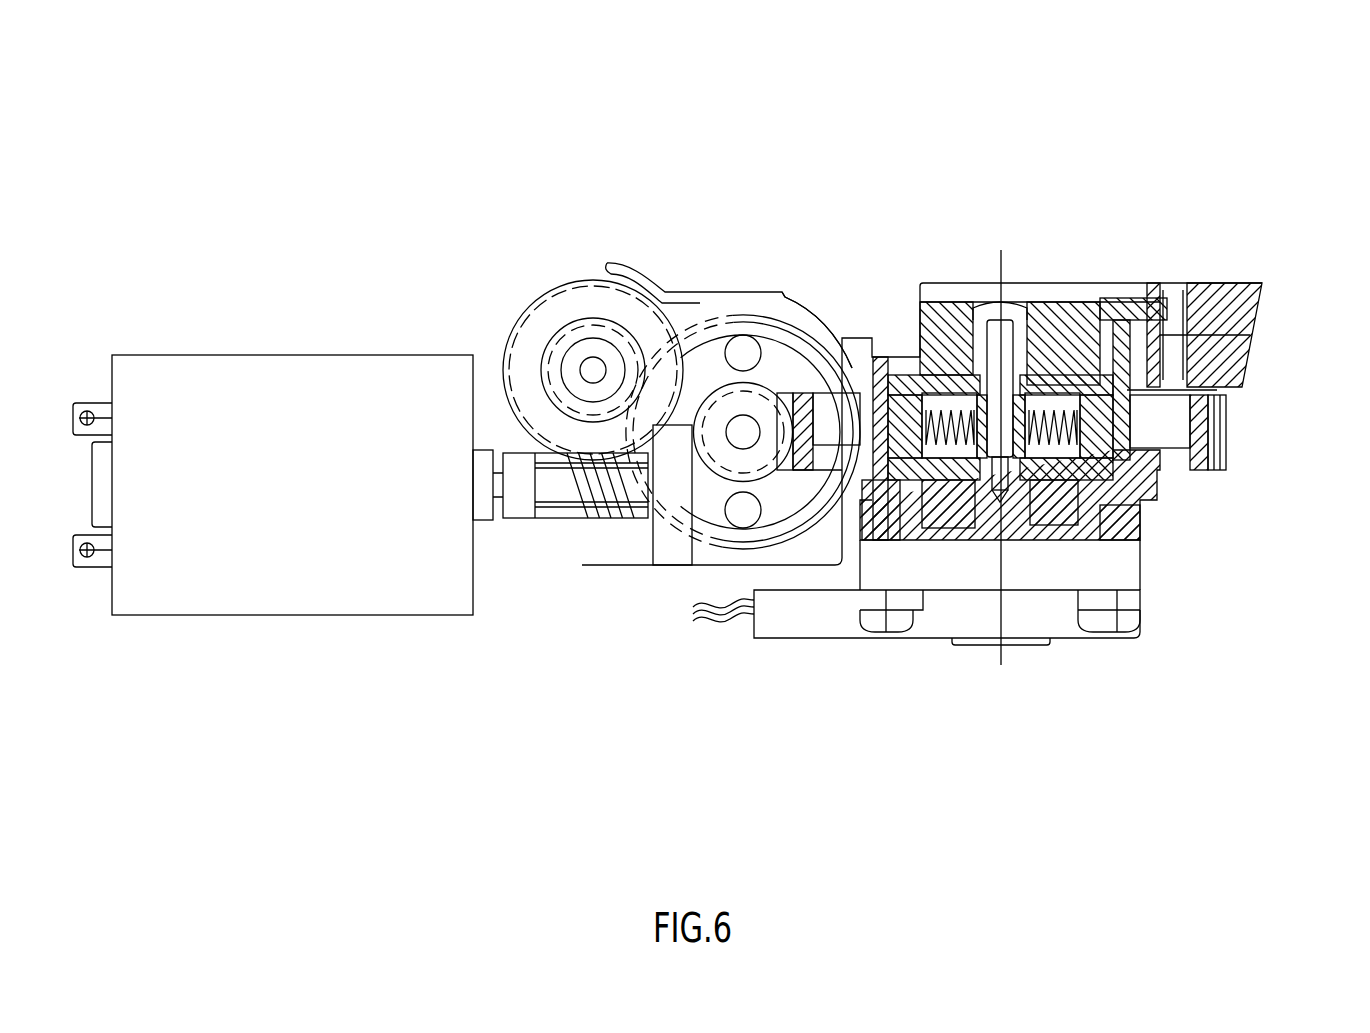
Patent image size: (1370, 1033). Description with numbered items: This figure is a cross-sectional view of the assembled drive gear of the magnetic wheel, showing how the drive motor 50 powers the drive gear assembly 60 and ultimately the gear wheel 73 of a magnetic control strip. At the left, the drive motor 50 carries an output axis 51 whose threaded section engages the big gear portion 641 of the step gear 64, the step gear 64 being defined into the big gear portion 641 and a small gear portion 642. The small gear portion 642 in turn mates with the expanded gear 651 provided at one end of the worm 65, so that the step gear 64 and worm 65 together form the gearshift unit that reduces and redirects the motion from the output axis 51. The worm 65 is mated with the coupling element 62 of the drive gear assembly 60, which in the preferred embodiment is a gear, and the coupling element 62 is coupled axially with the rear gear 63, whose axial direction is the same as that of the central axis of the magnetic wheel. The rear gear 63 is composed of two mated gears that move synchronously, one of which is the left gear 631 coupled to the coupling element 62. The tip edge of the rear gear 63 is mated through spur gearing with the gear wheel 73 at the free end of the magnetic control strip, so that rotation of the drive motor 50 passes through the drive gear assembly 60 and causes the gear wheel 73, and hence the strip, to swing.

The drive motor 50 is at (285, 615).
The output axis 51 is at (550, 518).
The drive gear assembly 60 is at (608, 153).
The coupling element 62 is at (1217, 437).
The rear gear 63 is at (1012, 418).
The left gear 631 is at (1187, 388).
The step gear 64 is at (430, 207).
The big gear portion 641 is at (545, 318).
The small gear portion 642 is at (590, 325).
The worm 65 is at (743, 391).
The expanded gear 651 is at (758, 308).
The gear wheel 73 is at (1187, 352).